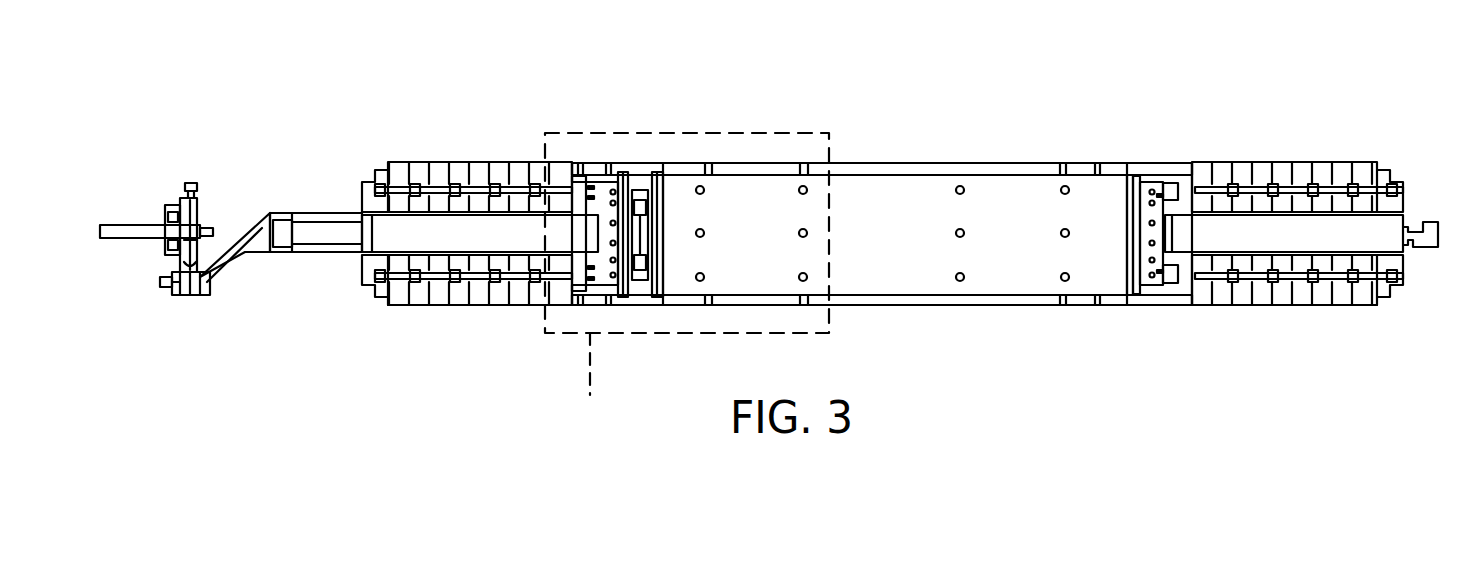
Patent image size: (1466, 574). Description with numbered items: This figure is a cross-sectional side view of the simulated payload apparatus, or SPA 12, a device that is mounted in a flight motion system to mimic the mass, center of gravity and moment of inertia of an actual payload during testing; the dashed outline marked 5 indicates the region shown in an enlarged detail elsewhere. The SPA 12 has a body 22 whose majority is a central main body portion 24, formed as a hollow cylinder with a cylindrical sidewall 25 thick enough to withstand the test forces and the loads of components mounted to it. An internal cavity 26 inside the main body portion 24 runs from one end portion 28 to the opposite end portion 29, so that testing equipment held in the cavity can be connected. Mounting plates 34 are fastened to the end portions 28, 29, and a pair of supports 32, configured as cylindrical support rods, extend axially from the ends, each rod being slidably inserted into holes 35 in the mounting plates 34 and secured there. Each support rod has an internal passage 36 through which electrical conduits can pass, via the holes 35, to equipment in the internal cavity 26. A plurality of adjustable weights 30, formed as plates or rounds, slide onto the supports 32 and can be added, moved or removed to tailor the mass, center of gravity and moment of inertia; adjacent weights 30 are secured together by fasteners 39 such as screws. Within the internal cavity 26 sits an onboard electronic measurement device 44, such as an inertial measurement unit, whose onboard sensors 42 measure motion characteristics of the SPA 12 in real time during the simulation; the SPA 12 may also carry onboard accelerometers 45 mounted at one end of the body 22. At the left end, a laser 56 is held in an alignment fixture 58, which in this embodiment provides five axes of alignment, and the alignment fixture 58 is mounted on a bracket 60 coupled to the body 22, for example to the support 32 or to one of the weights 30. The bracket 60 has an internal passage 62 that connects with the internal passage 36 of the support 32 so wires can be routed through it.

The simulated payload apparatus 12 is at (318, 80).
The section line 5 is at (590, 378).
The body 22 is at (1192, 133).
The main body portion 24 is at (1007, 160).
The cylindrical sidewall 25 is at (940, 166).
The internal cavity 26 is at (1018, 266).
The end portion 28 is at (612, 195).
The opposite end portion 29 is at (1157, 167).
The adjustable weights 30 is at (365, 180).
The supports 32 is at (460, 215).
The mounting plates 34 is at (610, 292).
The holes 35 is at (606, 220).
The internal passage 36 is at (400, 228).
The fasteners 39 is at (440, 278).
The onboard sensors 42 is at (628, 248).
The onboard electronic measurement device 44 is at (637, 193).
The onboard accelerometers 45 is at (1427, 233).
The laser 56 is at (135, 225).
The alignment fixture 58 is at (184, 205).
The bracket 60 is at (274, 256).
The internal passage 62 is at (334, 233).